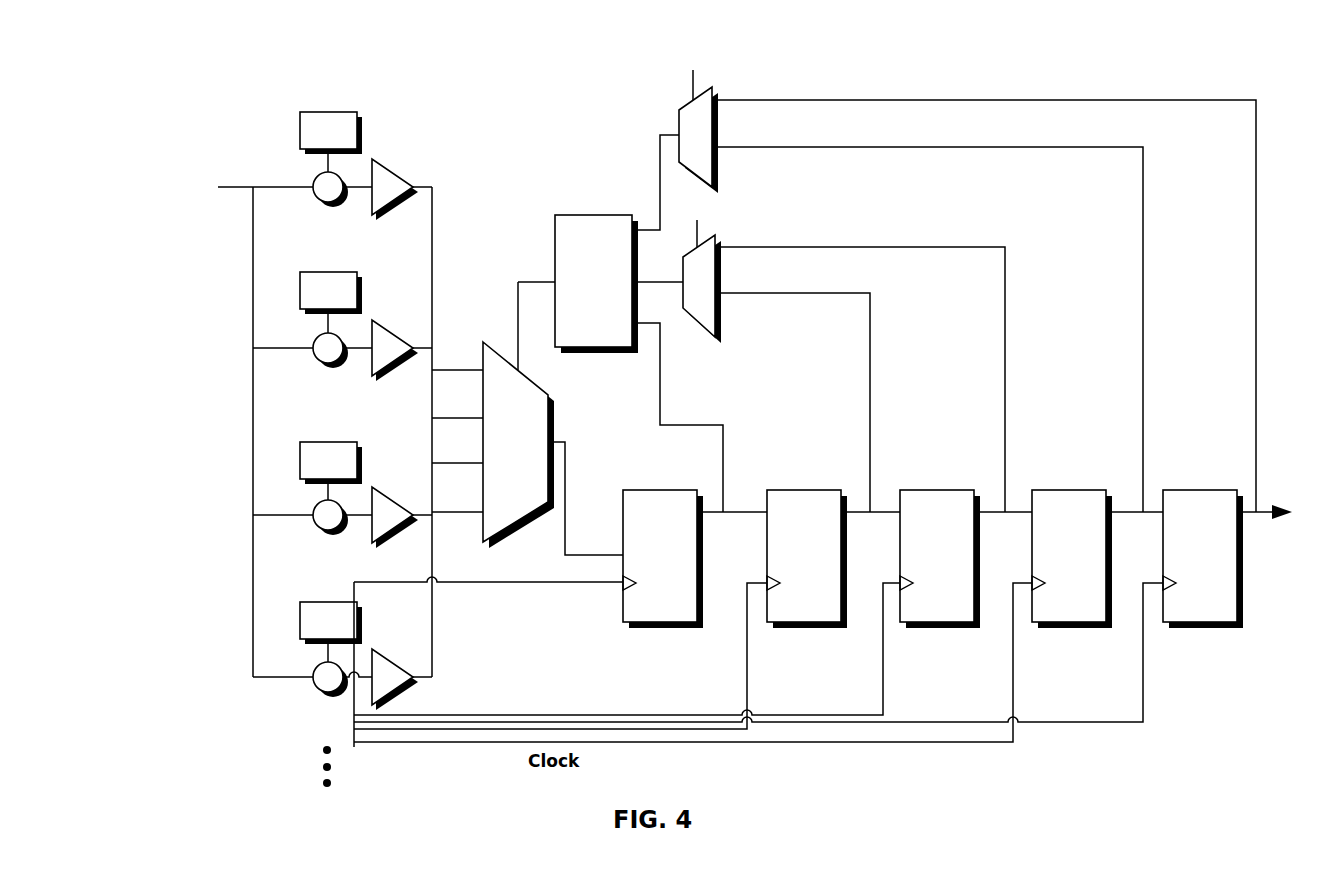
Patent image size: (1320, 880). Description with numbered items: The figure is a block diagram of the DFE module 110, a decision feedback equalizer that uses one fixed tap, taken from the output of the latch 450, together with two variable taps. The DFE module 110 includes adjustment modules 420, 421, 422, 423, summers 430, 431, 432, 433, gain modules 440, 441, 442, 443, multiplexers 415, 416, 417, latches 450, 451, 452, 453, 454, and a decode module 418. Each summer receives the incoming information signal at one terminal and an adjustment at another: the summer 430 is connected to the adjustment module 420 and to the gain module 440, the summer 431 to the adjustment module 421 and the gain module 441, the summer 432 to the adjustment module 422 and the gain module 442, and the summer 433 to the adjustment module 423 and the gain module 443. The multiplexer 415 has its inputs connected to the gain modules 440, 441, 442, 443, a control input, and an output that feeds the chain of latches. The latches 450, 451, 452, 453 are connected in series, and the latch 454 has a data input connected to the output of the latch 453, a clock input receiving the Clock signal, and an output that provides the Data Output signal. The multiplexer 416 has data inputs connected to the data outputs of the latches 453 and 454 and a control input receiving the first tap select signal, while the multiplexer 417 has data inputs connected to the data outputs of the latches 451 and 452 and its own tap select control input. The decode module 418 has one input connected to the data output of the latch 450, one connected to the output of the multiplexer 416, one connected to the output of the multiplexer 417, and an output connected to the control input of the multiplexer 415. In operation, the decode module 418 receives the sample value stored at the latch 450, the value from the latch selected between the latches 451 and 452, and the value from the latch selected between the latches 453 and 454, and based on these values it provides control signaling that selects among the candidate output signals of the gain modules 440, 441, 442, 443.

The DFE module 110 is at (349, 494).
The multiplexer 415 is at (552, 397).
The multiplexer 416 is at (677, 110).
The multiplexer 417 is at (697, 321).
The decode module 418 is at (592, 215).
The adjustment module 420 is at (327, 112).
The adjustment module 421 is at (325, 272).
The adjustment module 422 is at (325, 442).
The adjustment module 423 is at (325, 602).
The summer 430 is at (318, 175).
The summer 431 is at (318, 335).
The summer 432 is at (317, 503).
The summer 433 is at (315, 668).
The gain module 440 is at (385, 160).
The gain module 441 is at (385, 320).
The gain module 442 is at (382, 492).
The gain module 443 is at (385, 650).
The latch 450 is at (662, 627).
The latch 451 is at (805, 627).
The latch 452 is at (937, 627).
The latch 453 is at (1069, 627).
The latch 454 is at (1200, 627).